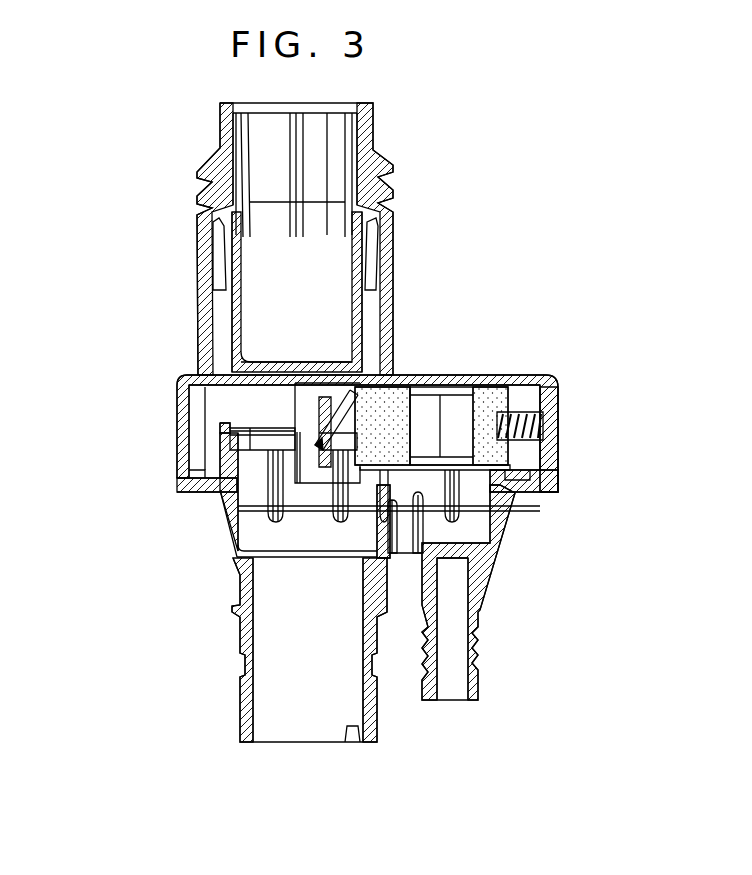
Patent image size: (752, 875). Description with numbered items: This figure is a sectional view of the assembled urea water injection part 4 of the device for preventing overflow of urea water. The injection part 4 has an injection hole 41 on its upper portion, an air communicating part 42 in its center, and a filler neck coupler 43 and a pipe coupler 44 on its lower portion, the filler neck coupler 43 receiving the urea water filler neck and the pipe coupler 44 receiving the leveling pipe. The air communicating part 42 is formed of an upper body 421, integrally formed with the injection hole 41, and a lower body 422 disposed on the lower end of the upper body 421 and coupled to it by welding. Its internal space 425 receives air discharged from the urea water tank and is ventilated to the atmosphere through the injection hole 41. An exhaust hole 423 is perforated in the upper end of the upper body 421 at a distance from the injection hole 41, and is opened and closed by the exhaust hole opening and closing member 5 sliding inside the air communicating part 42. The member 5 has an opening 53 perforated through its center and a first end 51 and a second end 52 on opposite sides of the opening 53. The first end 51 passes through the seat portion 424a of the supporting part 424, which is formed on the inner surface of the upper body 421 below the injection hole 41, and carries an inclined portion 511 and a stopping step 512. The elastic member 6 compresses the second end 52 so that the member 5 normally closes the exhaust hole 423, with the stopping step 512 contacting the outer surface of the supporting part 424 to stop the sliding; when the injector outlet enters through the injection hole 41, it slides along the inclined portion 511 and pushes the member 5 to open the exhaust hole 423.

The urea water injection part 4 is at (182, 212).
The injection hole 41 is at (376, 132).
The air communicating part 42 is at (297, 403).
The upper body 421 is at (185, 425).
The lower body 422 is at (185, 488).
The exhaust hole 423 is at (490, 380).
The supporting part 424 is at (300, 457).
The seat portion 424a is at (335, 462).
The internal space 425 is at (396, 556).
The filler neck coupler 43 is at (243, 708).
The pipe coupler 44 is at (478, 638).
The exhaust hole opening and closing member 5 is at (400, 382).
The first end 51 is at (318, 448).
The inclined portion 511 is at (322, 437).
The stopping step 512 is at (350, 392).
The second end 52 is at (527, 376).
The opening 53 is at (472, 408).
The elastic member 6 is at (547, 427).